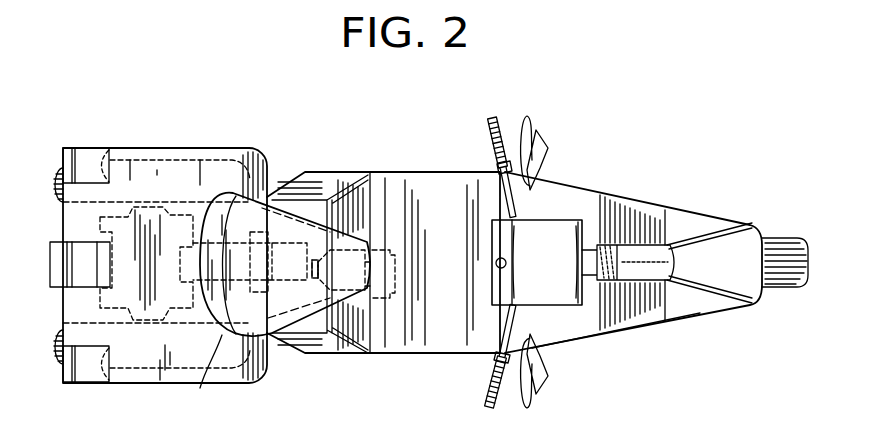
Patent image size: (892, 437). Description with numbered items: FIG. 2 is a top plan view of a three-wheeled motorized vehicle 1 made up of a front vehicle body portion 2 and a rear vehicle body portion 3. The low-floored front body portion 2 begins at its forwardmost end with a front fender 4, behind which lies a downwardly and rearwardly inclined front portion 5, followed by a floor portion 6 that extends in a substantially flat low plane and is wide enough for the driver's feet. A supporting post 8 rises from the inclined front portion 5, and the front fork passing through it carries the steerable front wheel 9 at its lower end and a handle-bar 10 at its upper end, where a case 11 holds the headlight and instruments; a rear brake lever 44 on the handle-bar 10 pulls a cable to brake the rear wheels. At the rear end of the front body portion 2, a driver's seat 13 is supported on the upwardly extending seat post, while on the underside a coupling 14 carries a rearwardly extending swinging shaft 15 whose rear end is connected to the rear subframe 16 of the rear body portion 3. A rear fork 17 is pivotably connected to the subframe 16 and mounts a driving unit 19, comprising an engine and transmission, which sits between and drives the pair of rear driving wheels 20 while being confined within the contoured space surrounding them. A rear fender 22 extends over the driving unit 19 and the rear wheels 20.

The three-wheeled motorized vehicle 1 is at (629, 195).
The front vehicle body portion 2 is at (429, 195).
The rear vehicle body portion 3 is at (215, 141).
The front fender 4 is at (738, 247).
The front portion 5 is at (602, 318).
The floor portion 6 is at (456, 330).
The supporting post 8 is at (642, 257).
The front wheel 9 is at (774, 278).
The handle-bar 10 is at (492, 118).
The case 11 is at (550, 228).
The driver's seat 13 is at (250, 200).
The coupling 14 is at (356, 312).
The swinging shaft 15 is at (292, 338).
The rear subframe 16 is at (292, 243).
The rear fork 17 is at (212, 372).
The driving unit 19 is at (85, 306).
The rear driving wheels 20 is at (60, 178).
The rear fender 22 is at (70, 228).
The rear brake lever 44 is at (527, 402).